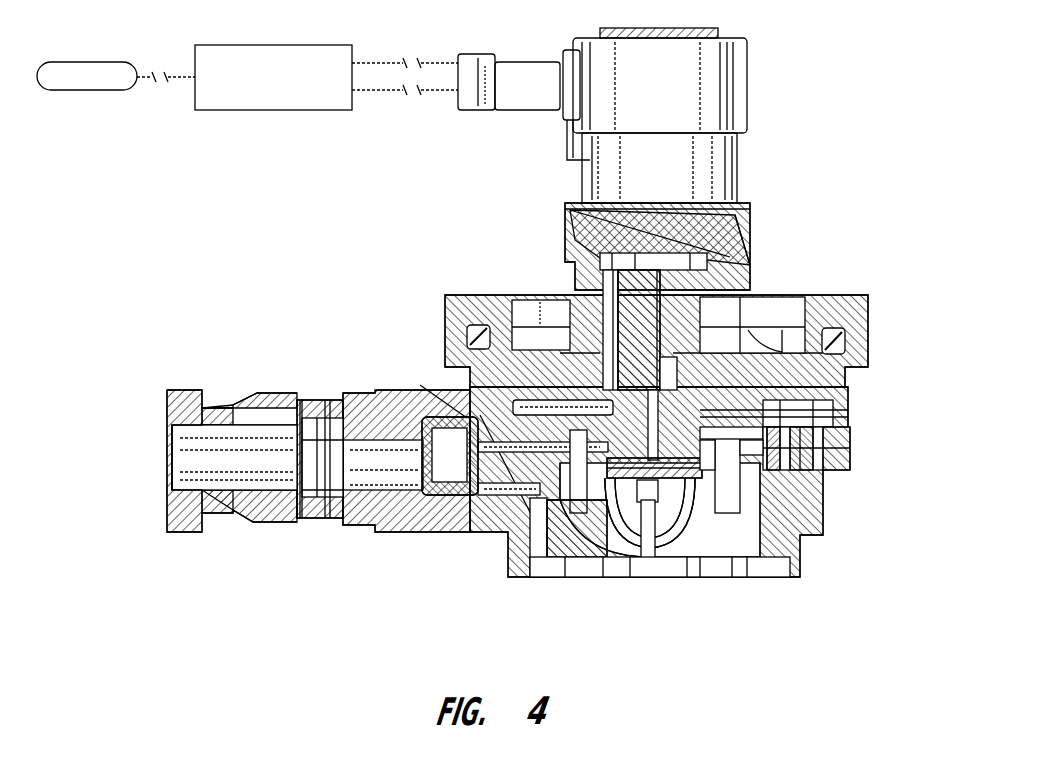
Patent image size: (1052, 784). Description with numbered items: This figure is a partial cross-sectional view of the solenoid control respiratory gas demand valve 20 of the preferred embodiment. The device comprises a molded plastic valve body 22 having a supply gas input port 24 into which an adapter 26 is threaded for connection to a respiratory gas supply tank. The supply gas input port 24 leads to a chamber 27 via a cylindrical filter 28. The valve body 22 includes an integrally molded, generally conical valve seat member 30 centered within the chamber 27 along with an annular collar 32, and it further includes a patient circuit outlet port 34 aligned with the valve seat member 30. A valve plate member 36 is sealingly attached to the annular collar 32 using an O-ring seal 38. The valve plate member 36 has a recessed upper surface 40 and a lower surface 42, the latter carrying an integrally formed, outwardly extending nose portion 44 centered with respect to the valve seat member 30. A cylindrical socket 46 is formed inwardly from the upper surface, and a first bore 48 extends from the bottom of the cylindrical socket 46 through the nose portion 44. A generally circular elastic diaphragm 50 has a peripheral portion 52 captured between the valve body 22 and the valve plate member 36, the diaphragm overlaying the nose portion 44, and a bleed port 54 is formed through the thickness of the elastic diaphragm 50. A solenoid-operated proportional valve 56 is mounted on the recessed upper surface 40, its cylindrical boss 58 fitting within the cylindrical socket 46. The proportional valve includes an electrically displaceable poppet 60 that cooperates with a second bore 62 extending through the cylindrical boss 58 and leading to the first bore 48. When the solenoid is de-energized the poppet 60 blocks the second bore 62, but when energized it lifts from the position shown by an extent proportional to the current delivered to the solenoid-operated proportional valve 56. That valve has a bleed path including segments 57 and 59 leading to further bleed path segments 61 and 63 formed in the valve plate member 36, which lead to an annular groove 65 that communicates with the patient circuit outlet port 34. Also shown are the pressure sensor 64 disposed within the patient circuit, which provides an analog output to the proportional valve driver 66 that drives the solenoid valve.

The solenoid control respiratory gas demand valve 20 is at (798, 165).
The valve body 22 is at (383, 532).
The supply gas input port 24 is at (388, 390).
The adapter 26 is at (178, 392).
The chamber 27 is at (622, 520).
The cylindrical filter 28 is at (553, 557).
The valve seat member 30 is at (653, 560).
The annular collar 32 is at (850, 383).
The patient circuit outlet port 34 is at (735, 578).
The valve plate member 36 is at (847, 297).
The O-ring seal 38 is at (850, 331).
The recessed upper surface 40 is at (778, 333).
The lower surface 42 is at (460, 530).
The nose portion 44 is at (800, 498).
The cylindrical socket 46 is at (800, 409).
The first bore 48 is at (847, 458).
The elastic diaphragm 50 is at (823, 475).
The peripheral portion 52 is at (847, 428).
The bleed port 54 is at (687, 520).
The solenoid-operated proportional valve 56 is at (747, 72).
The bleed path segment 57 is at (617, 257).
The cylindrical boss 58 is at (605, 318).
The bleed path segment 59 is at (615, 287).
The poppet 60 is at (745, 222).
The bleed path segment 61 is at (573, 357).
The second bore 62 is at (747, 248).
The bleed path segment 63 is at (458, 332).
The pressure sensor 64 is at (100, 62).
The annular groove 65 is at (815, 418).
The proportional valve driver 66 is at (290, 47).